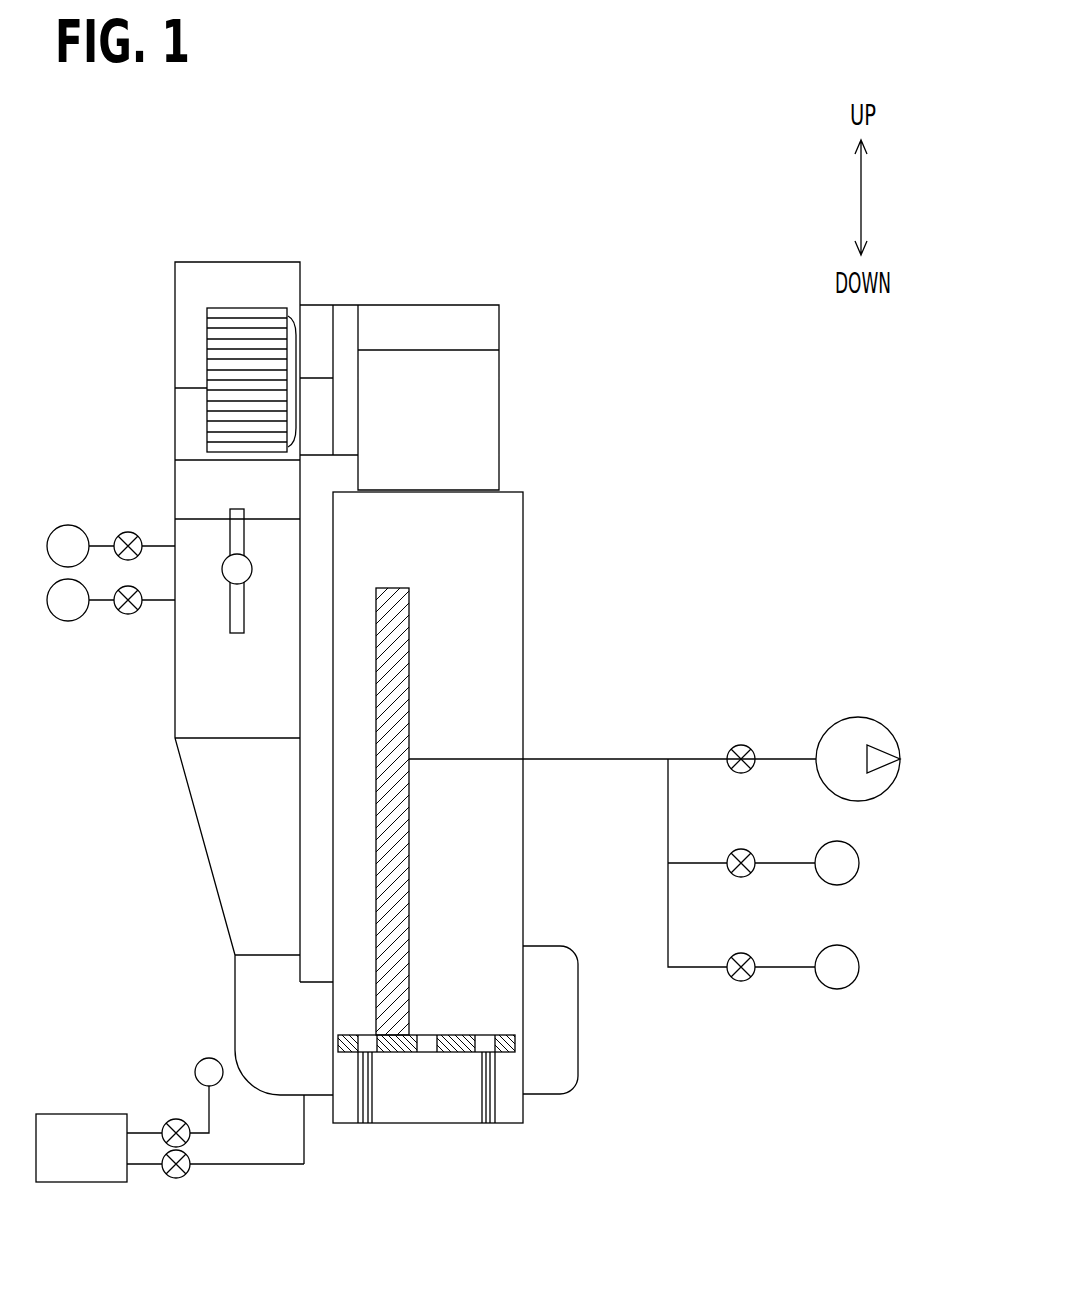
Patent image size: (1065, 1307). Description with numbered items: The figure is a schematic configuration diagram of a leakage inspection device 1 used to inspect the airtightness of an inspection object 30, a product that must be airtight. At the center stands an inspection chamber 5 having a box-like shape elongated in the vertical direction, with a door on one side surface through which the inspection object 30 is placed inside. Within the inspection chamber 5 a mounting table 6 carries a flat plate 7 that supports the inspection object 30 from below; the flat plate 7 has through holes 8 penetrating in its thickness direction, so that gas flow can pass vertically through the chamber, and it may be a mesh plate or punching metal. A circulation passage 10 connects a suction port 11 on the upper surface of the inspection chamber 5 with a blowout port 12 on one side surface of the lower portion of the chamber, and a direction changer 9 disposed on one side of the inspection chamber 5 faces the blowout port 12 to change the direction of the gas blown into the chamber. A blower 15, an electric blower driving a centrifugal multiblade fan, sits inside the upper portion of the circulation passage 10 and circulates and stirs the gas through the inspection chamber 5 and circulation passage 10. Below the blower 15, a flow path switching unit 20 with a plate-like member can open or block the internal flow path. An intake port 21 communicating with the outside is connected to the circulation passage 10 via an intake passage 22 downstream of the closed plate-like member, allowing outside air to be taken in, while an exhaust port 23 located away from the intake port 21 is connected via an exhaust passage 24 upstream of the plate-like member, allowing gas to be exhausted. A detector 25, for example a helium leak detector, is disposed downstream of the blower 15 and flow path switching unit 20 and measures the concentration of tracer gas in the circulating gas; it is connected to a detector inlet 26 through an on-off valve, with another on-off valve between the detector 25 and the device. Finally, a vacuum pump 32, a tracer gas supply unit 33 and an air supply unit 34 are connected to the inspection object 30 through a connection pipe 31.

The leakage inspection device 1 is at (151, 172).
The inspection chamber 5 is at (523, 547).
The mounting table 6 is at (483, 1103).
The flat plate 7 is at (515, 1045).
The through holes 8 is at (368, 1052).
The direction changer 9 is at (553, 1020).
The circulation passage 10 is at (175, 300).
The suction port 11 is at (499, 490).
The blowout port 12 is at (325, 1095).
The blower 15 is at (255, 283).
The flow path switching unit 20 is at (216, 622).
The intake port 21 is at (68, 621).
The intake passage 22 is at (100, 600).
The exhaust port 23 is at (68, 525).
The exhaust passage 24 is at (160, 546).
The detector 25 is at (55, 1182).
The detector inlet 26 is at (194, 1072).
The inspection object 30 is at (409, 620).
The connection pipe 31 is at (593, 759).
The vacuum pump 32 is at (862, 717).
The tracer gas supply unit 33 is at (859, 863).
The air supply unit 34 is at (859, 967).